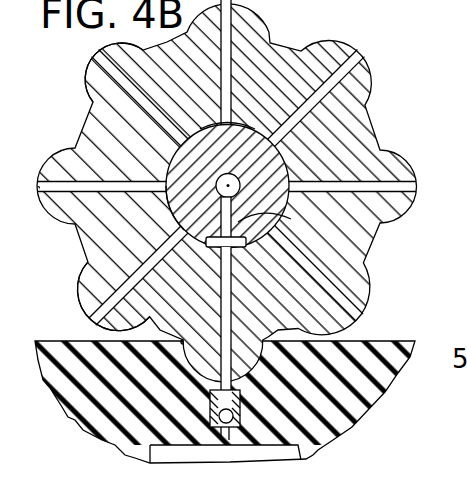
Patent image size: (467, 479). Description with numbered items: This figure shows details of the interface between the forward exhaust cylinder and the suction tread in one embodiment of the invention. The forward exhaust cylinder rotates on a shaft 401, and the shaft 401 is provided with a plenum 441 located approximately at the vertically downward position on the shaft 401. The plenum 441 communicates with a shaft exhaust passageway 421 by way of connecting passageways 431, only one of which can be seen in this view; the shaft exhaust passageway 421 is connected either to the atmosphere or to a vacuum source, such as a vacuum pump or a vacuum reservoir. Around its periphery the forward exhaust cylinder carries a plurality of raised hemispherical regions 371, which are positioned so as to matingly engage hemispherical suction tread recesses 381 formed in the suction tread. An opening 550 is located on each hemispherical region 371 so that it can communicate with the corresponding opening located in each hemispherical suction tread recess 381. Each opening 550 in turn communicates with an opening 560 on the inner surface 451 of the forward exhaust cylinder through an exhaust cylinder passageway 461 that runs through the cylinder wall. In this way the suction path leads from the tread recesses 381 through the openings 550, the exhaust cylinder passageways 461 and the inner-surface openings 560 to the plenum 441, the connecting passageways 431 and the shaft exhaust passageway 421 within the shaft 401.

The raised hemispherical region 371 is at (265, 33).
The opening 550 is at (100, 65).
The shaft exhaust passageway 421 is at (247, 180).
The inner surface 451 is at (246, 124).
The connecting passageway 431 is at (291, 219).
The plenum 441 is at (238, 247).
The hemispherical suction tread recess 381 is at (245, 365).
The exhaust cylinder passageway 461 is at (150, 107).
The shaft 401 is at (178, 250).
The opening 560 is at (167, 203).